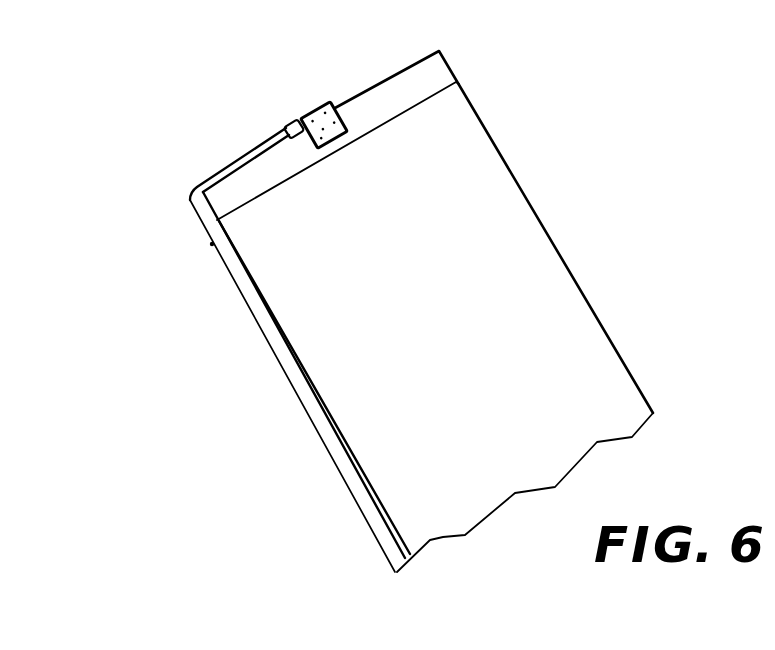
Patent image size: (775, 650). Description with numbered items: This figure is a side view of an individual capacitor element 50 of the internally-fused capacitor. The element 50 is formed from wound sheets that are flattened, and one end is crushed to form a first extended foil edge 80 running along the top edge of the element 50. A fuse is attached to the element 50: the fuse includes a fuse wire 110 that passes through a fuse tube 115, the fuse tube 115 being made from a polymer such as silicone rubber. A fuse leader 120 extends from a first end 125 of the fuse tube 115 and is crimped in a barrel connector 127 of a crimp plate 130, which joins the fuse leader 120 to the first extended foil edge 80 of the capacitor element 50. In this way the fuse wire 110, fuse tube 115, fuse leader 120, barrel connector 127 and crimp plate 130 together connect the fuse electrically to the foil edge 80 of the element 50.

The capacitor element 50 is at (546, 224).
The first extended foil edge 80 is at (447, 62).
The fuse wire 110 is at (212, 244).
The fuse tube 115 is at (348, 481).
The fuse leader 120 is at (195, 214).
The first end 125 is at (213, 252).
The barrel connector 127 is at (287, 128).
The crimp plate 130 is at (314, 115).